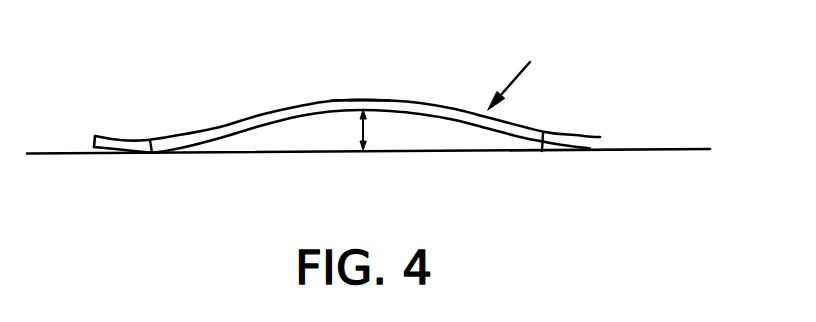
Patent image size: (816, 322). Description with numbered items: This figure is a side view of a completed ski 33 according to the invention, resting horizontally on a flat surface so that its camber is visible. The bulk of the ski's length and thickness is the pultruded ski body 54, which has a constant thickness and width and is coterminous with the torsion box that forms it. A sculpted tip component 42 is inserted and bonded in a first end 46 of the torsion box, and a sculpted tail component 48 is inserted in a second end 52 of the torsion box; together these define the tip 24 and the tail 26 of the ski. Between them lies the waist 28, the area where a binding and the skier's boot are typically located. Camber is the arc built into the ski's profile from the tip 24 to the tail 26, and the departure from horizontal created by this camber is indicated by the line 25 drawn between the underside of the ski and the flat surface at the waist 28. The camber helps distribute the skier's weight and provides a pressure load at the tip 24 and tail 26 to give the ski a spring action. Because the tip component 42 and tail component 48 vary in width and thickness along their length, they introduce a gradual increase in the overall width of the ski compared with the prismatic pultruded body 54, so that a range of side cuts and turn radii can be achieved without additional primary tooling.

The tip 24 is at (600, 137).
The line indicating camber departure from horizontal 25 is at (367, 135).
The tail 26 is at (90, 151).
The waist 28 is at (343, 98).
The ski 33 is at (526, 68).
The sculpted tip component 42 is at (574, 135).
The first end of the torsion box 46 is at (542, 150).
The sculpted tail component 48 is at (112, 134).
The second end of the torsion box 52 is at (152, 148).
The ski body 54 is at (365, 98).